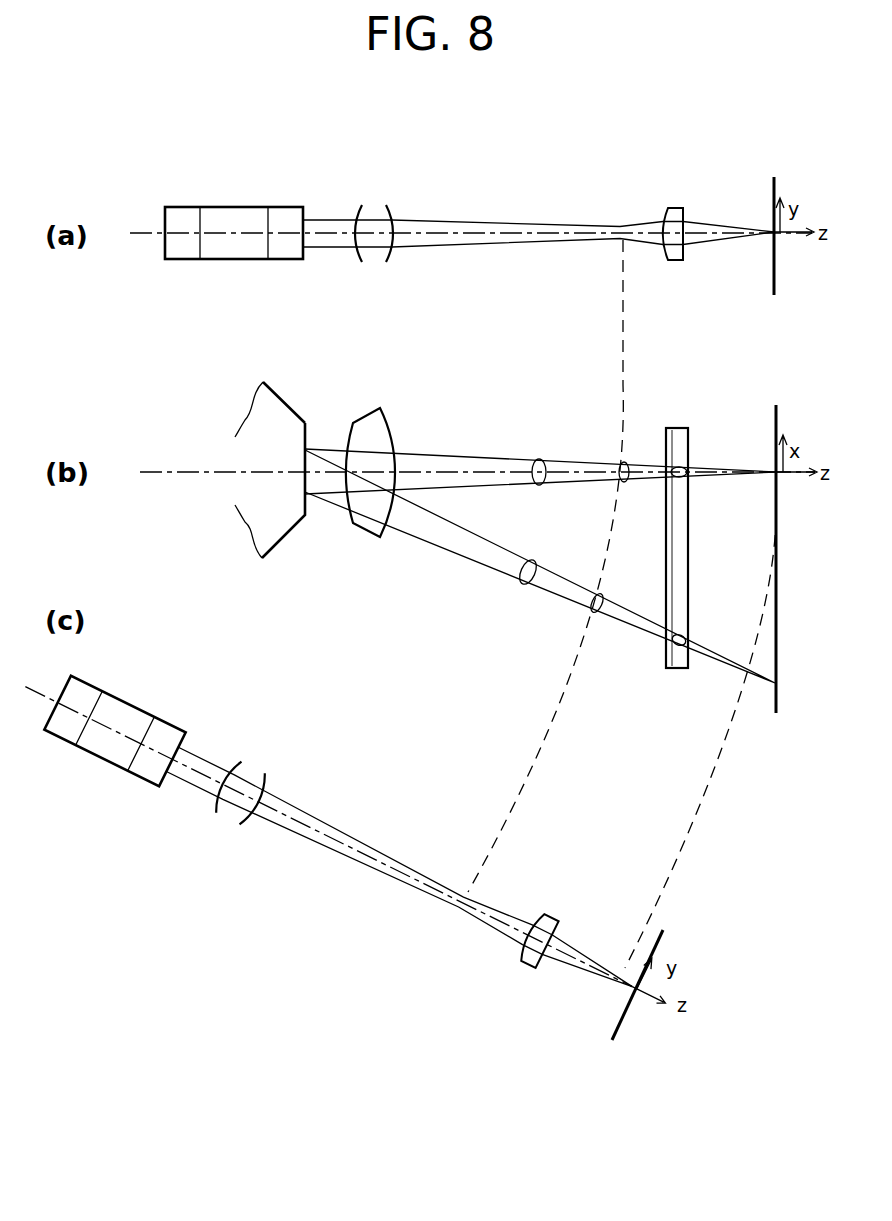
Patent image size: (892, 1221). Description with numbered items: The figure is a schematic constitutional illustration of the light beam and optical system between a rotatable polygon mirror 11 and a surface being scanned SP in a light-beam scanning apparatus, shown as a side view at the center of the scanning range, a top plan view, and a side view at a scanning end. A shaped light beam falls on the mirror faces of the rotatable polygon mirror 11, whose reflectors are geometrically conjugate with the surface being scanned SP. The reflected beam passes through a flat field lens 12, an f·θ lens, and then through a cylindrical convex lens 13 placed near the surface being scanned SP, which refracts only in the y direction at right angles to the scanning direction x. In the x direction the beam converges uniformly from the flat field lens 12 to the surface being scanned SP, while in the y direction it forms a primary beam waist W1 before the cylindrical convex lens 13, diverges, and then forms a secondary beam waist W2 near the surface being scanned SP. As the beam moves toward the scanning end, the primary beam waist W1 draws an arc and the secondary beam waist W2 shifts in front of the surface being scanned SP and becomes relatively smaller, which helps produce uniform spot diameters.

The rotatable polygon mirror 11 is at (233, 207).
The flat field lens 12 is at (391, 208).
The cylindrical convex lens 13 is at (675, 208).
The surface being scanned SP is at (772, 283).
The primary beam waist W1 is at (621, 593).
The secondary beam waist W2 is at (738, 653).